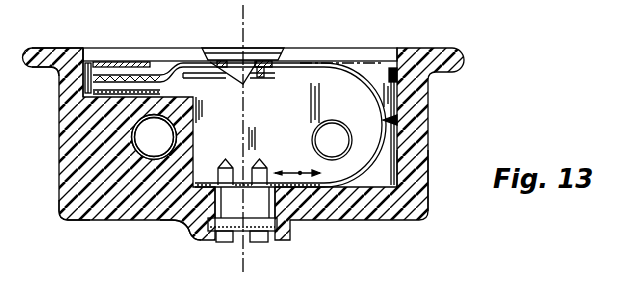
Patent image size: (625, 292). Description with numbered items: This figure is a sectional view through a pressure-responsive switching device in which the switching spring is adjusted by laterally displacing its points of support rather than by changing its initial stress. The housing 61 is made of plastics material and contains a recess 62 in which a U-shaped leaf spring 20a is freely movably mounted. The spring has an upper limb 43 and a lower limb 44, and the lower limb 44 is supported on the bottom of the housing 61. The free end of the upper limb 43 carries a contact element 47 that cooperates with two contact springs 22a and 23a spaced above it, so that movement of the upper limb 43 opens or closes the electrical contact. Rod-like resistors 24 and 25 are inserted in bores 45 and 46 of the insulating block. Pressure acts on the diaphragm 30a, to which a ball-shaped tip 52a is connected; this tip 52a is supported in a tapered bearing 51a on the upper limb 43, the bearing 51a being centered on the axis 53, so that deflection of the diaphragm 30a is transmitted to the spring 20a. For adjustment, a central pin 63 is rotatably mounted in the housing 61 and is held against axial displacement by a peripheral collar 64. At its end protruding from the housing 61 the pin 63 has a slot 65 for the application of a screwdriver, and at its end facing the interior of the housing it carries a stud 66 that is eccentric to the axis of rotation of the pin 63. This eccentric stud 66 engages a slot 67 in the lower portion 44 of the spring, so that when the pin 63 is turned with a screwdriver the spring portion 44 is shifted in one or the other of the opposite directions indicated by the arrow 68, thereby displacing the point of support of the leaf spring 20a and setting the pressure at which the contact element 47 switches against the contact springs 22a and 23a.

The leaf spring 20a is at (400, 113).
The contact spring 22a is at (143, 78).
The contact spring 23a is at (113, 62).
The rod-like resistor 24 is at (152, 160).
The rod-like resistor 25 is at (317, 124).
The diaphragm 30a is at (380, 62).
The upper limb 43 is at (305, 66).
The lower limb 44 is at (302, 190).
The bore 45 is at (131, 143).
The bore 46 is at (350, 150).
The contact element 47 is at (83, 93).
The tapered bearing 51a is at (255, 70).
The ball-shaped tip 52a is at (242, 73).
The axis 53 is at (245, 33).
The housing 61 is at (85, 212).
The recess 62 is at (380, 172).
The central pin 63 is at (257, 247).
The peripheral collar 64 is at (217, 243).
The slot 65 is at (240, 247).
The stud 66 is at (228, 162).
The slot 67 is at (192, 200).
The arrow 68 is at (292, 177).